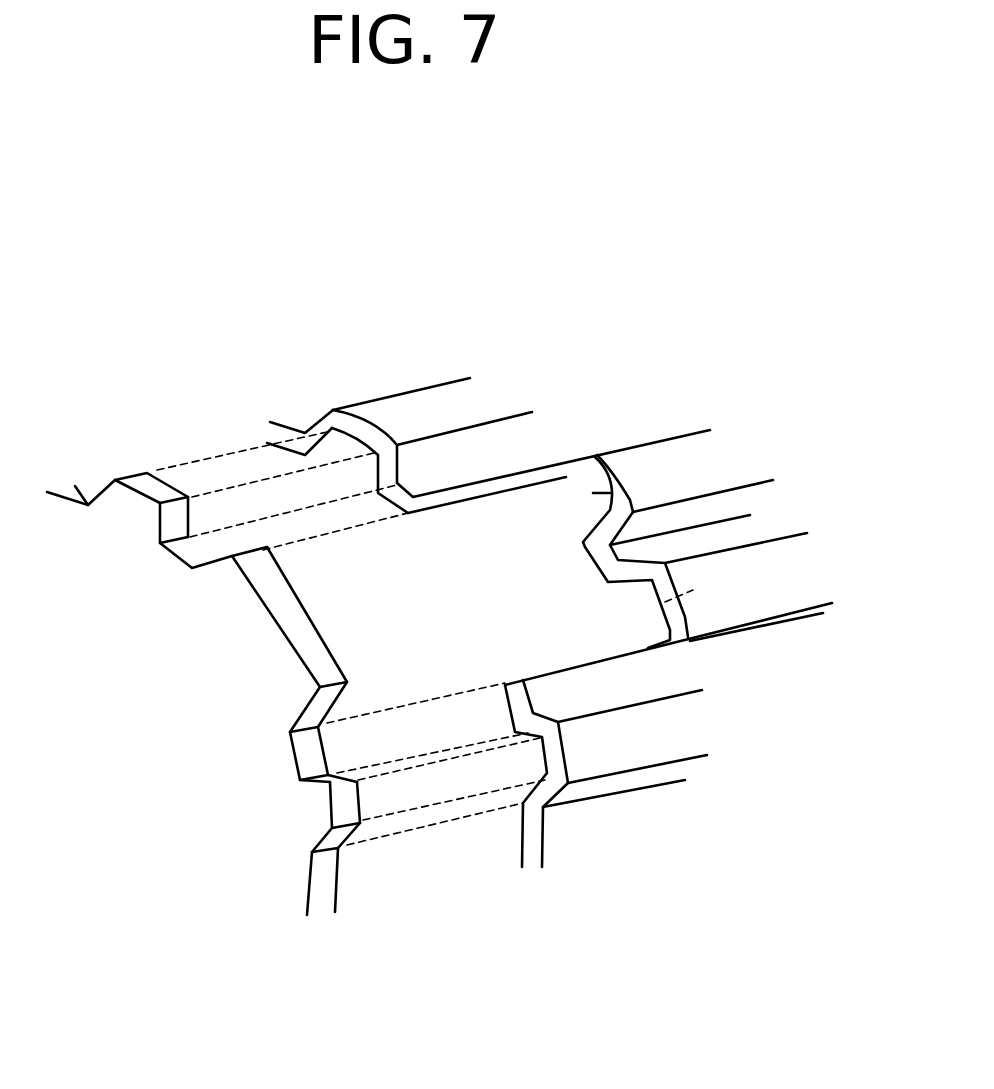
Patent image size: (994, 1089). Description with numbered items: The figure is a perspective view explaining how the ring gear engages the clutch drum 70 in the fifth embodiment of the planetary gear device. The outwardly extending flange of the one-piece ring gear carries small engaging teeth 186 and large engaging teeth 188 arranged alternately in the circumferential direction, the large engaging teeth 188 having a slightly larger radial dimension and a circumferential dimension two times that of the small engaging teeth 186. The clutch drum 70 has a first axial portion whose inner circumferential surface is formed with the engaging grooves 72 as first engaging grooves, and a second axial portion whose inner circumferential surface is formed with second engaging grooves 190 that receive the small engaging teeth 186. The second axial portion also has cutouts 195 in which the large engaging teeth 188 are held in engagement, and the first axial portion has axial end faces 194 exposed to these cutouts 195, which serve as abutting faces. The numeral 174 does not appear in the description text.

The clutch drum 70 is at (648, 460).
The engaging grooves 72 is at (668, 600).
The tooth 174 is at (103, 552).
The small engaging teeth 186 is at (345, 807).
The large engaging teeth 188 is at (318, 648).
The second engaging grooves 190 is at (319, 442).
The axial end faces 194 is at (593, 493).
The cutouts 195 is at (500, 490).